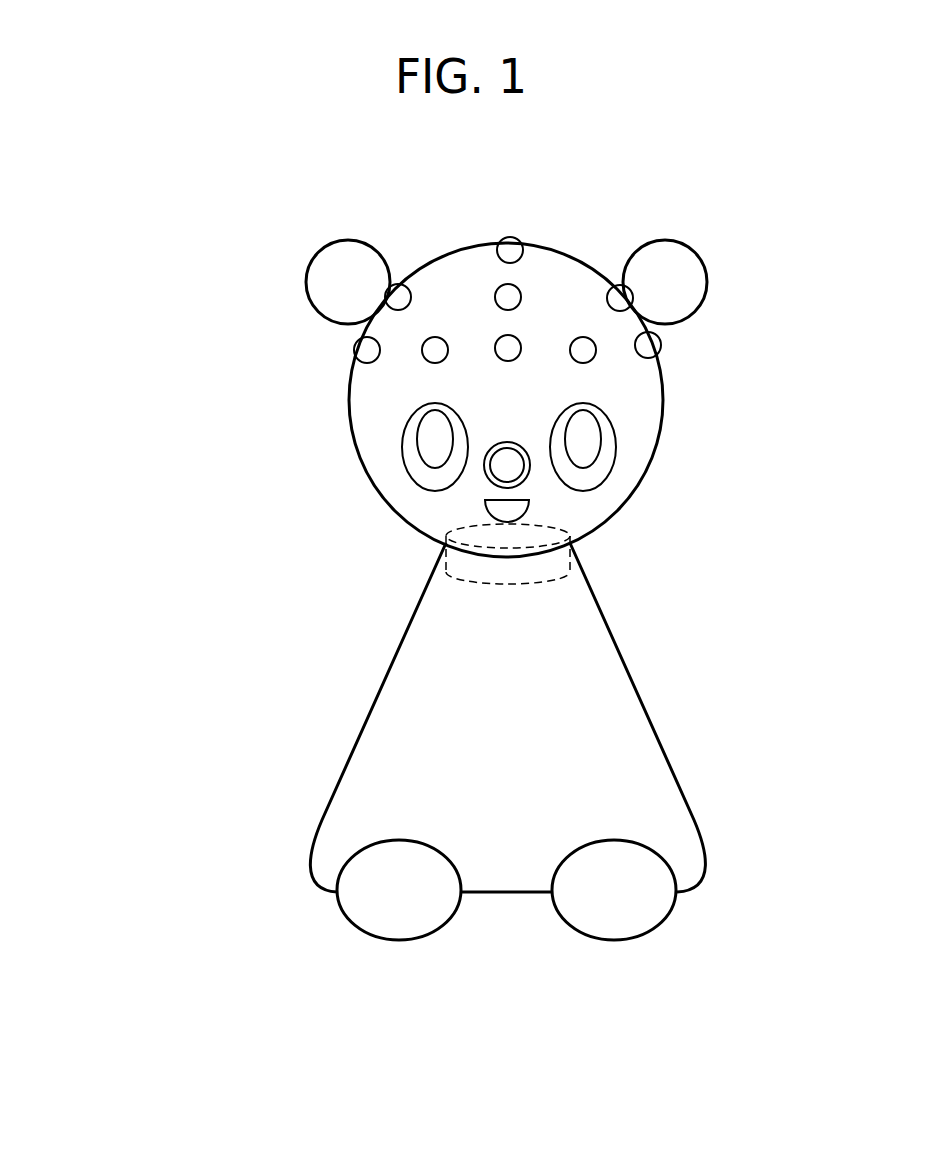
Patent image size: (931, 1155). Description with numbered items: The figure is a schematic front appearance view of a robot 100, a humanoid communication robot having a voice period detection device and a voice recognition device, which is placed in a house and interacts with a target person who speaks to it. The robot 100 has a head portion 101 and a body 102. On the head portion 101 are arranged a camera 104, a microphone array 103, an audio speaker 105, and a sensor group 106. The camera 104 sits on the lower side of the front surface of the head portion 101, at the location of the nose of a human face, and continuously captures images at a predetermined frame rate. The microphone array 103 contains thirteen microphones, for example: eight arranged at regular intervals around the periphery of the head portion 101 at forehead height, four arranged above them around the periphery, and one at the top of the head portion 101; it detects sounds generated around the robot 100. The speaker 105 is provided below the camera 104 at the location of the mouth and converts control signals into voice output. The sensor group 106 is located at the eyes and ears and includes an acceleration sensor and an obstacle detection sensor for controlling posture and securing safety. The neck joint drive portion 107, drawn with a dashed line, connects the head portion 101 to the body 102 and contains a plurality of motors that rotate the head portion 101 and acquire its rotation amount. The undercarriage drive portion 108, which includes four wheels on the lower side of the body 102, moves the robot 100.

The robot 100 is at (205, 238).
The head portion 101 is at (322, 437).
The body 102 is at (345, 704).
The microphone array 103 is at (510, 343).
The camera 104 is at (503, 470).
The speaker 105 is at (530, 512).
The sensor group 106 is at (328, 265).
The neck joint drive portion 107 is at (460, 580).
The undercarriage drive portion 108 is at (357, 927).